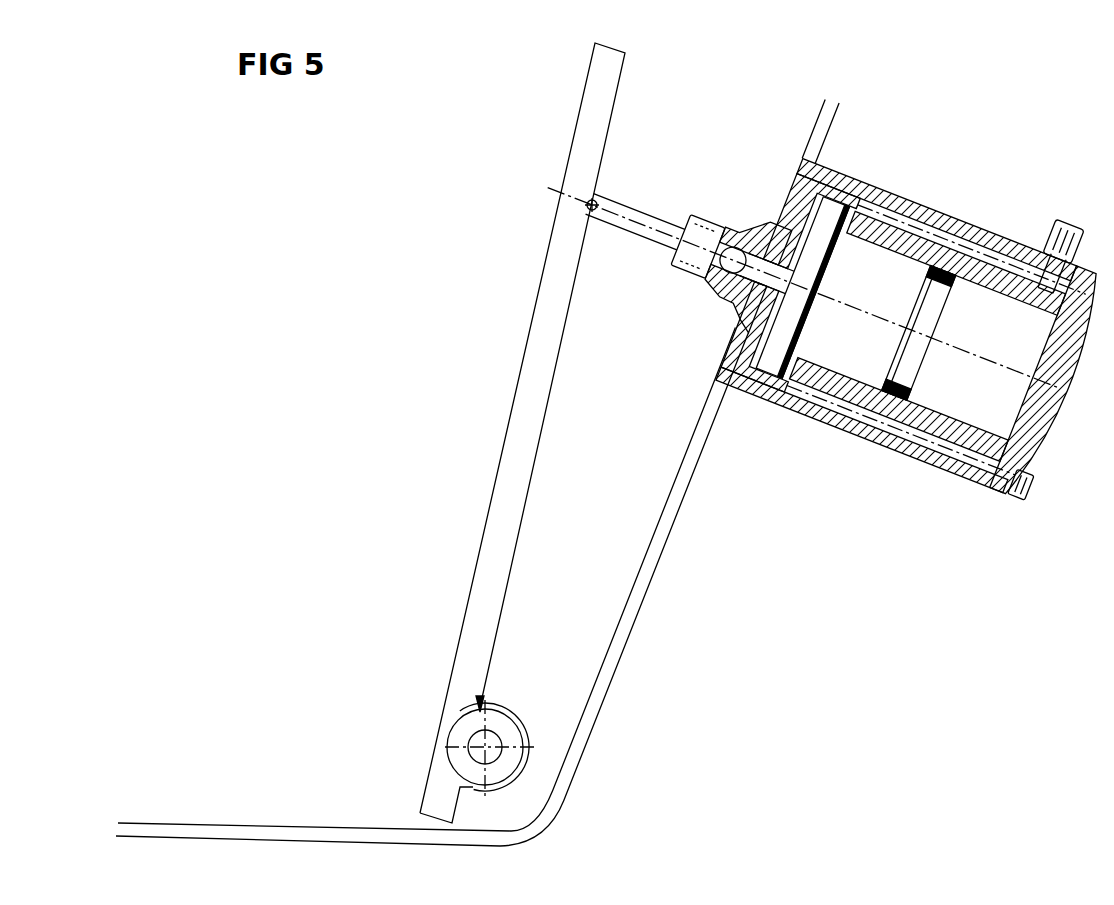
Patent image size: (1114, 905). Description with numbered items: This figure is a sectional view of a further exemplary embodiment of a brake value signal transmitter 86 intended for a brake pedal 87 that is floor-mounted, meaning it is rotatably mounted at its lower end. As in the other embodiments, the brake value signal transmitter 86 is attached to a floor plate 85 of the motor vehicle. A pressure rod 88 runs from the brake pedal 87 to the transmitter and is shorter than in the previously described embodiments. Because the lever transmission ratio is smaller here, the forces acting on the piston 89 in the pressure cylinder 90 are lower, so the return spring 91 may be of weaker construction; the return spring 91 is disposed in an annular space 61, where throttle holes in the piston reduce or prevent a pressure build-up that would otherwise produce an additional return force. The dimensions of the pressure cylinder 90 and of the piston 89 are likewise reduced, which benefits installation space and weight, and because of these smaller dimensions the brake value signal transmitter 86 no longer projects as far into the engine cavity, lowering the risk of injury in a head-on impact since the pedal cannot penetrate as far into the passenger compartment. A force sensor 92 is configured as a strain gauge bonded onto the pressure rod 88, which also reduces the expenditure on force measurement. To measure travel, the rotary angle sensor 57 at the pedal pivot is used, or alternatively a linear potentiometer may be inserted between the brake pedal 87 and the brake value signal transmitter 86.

The rotary angle sensor 57 is at (467, 712).
The annular space 61 is at (853, 390).
The floor plate 85 is at (230, 824).
The brake value signal transmitter 86 is at (830, 520).
The brake pedal 87 is at (543, 326).
The pressure rod 88 is at (628, 238).
The piston 89 is at (863, 270).
The pressure cylinder 90 is at (1012, 230).
The return spring 91 is at (920, 240).
The force sensor 92 is at (637, 203).